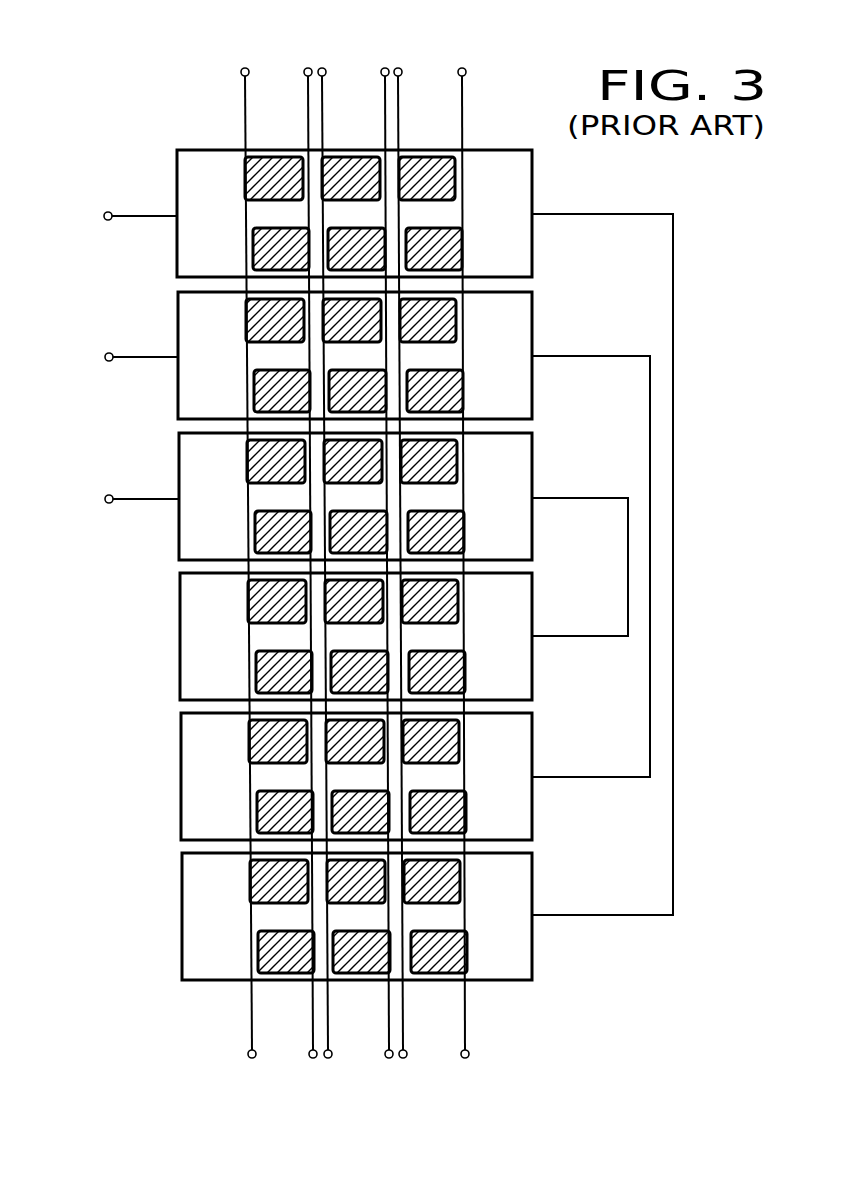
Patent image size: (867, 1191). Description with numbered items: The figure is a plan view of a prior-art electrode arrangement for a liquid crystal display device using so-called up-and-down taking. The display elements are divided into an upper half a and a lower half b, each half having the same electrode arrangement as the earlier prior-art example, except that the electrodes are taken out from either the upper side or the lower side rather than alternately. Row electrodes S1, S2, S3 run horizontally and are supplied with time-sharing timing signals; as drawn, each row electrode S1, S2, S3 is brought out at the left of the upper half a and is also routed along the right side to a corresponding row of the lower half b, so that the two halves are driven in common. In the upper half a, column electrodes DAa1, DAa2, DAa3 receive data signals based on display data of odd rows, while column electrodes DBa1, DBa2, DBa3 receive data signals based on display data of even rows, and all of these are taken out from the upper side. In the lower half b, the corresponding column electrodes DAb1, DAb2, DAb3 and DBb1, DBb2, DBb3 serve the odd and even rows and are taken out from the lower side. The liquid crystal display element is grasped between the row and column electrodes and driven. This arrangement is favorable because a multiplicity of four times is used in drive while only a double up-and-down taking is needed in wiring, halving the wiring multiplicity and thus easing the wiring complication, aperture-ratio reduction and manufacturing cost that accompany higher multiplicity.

The upper half a is at (705, 147).
The lower half b is at (705, 570).
The row electrode S1 is at (686, 276).
The row electrode S2 is at (684, 417).
The row electrode S3 is at (684, 604).
The column electrode DAa1 is at (246, 68).
The column electrode DBa1 is at (304, 72).
The column electrode DAa2 is at (325, 68).
The column electrode DBa2 is at (381, 72).
The column electrode DAa3 is at (400, 68).
The column electrode DBa3 is at (465, 68).
The column electrode DAb1 is at (251, 1058).
The column electrode DBb1 is at (310, 1057).
The column electrode DAb2 is at (348, 1062).
The column electrode DBb2 is at (386, 1058).
The column electrode DAb3 is at (405, 1058).
The column electrode DBb3 is at (470, 1054).